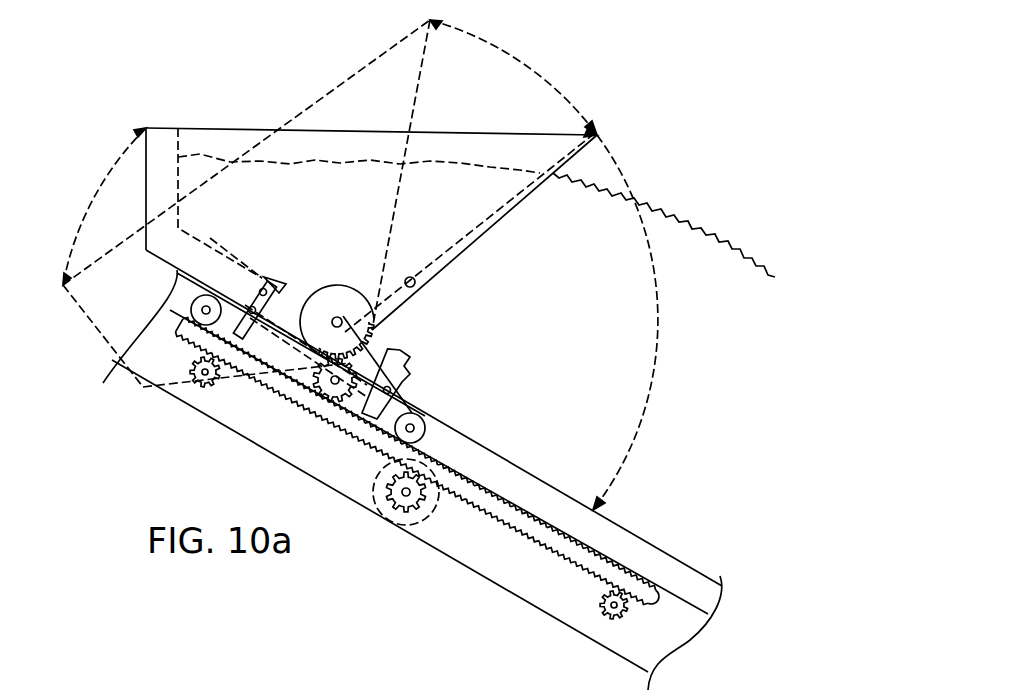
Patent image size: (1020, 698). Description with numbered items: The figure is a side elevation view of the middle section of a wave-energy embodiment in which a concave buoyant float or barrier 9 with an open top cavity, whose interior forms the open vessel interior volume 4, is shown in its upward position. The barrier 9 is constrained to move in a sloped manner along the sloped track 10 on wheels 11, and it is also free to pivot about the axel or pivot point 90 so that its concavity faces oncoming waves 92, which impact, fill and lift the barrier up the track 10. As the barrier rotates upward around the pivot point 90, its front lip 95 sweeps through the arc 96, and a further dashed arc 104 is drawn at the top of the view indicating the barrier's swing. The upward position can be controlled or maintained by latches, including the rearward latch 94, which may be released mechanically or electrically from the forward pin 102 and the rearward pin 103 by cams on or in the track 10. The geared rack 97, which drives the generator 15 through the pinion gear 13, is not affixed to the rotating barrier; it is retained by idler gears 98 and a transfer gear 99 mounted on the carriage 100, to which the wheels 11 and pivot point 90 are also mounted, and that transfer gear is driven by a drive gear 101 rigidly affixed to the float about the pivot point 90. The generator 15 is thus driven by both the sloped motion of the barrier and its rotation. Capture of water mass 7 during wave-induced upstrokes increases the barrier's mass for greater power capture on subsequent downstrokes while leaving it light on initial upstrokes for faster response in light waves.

The open vessel interior volume 4 is at (316, 168).
The water mass 7 is at (458, 160).
The concave buoyant float or barrier 9 is at (163, 137).
The sloped track 10 is at (652, 543).
The wheels 11 is at (192, 300).
The pinion gear 13 is at (396, 481).
The generator 15 is at (389, 516).
The axel or pivot point 90 is at (337, 290).
The oncoming waves 92 is at (683, 220).
The rearward latch 94 is at (261, 288).
The front lip 95 is at (599, 133).
The arc 96 is at (660, 333).
The geared rack 97 is at (548, 548).
The idler gears 98 is at (206, 387).
The transfer gear 99 is at (318, 401).
The carriage 100 is at (285, 308).
The drive gear 101 is at (376, 331).
The forward pin 102 is at (417, 285).
The rearward pin 103 is at (256, 280).
The arc path 104 is at (518, 70).